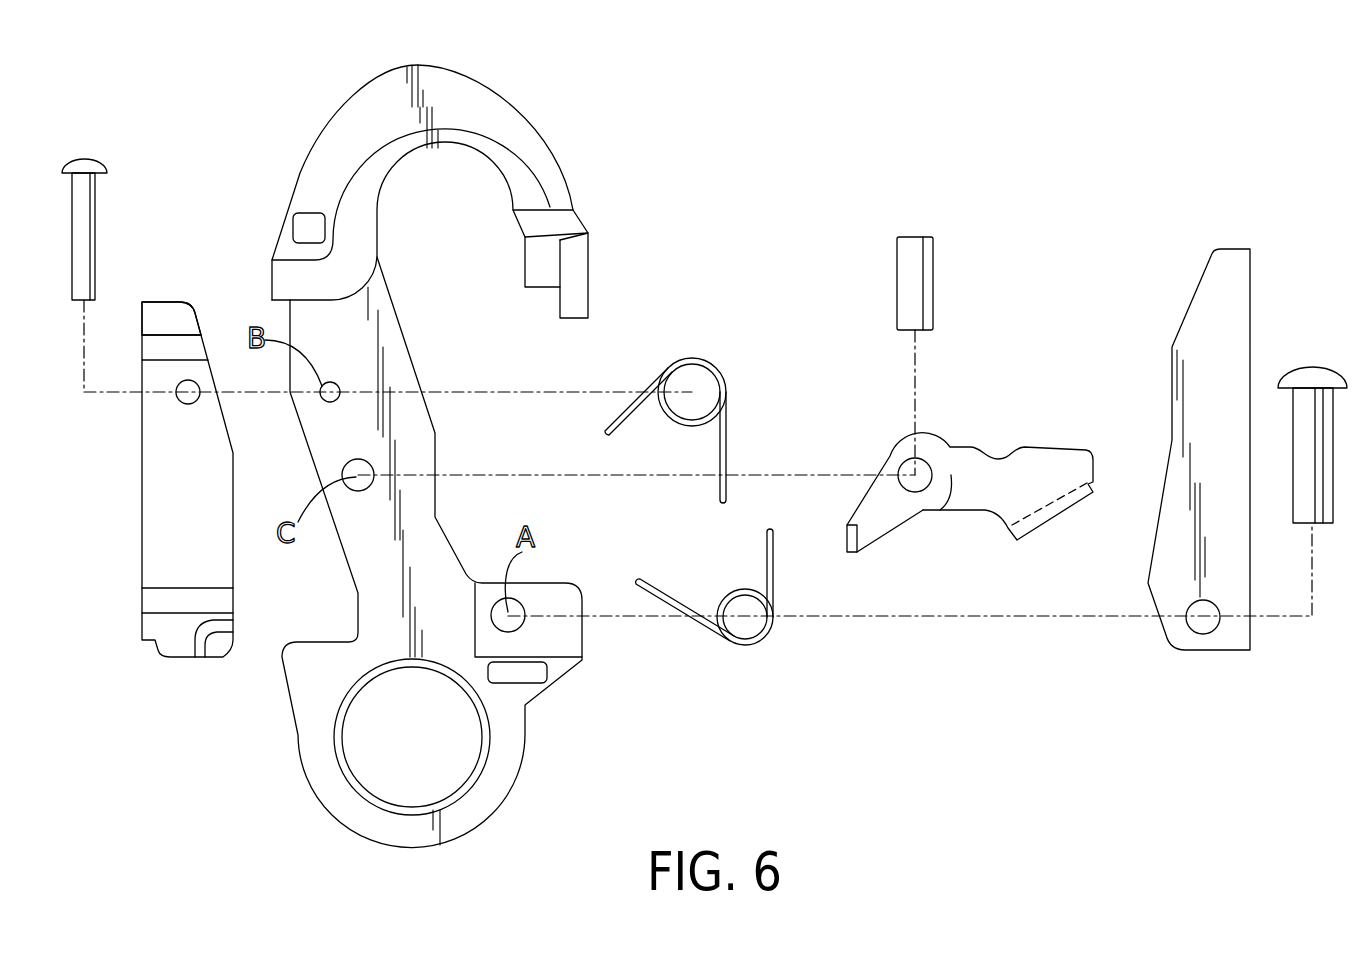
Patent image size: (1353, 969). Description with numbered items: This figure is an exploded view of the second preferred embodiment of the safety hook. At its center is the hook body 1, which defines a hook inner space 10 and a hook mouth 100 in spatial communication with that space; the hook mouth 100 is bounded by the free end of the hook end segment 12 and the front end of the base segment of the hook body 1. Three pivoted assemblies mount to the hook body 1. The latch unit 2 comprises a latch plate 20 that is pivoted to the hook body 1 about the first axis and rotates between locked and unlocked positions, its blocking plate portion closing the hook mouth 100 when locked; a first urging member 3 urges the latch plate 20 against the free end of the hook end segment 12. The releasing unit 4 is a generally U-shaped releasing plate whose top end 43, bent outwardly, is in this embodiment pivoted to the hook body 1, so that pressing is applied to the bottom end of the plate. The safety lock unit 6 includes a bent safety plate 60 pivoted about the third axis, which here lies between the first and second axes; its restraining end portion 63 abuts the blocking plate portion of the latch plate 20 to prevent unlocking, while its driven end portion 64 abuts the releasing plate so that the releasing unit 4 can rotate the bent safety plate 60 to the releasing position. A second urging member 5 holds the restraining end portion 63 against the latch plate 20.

The hook body 1 is at (318, 832).
The latch unit 2 is at (1265, 233).
The first urging member 3 is at (765, 646).
The releasing unit 4 is at (118, 665).
The second urging member 5 is at (716, 352).
The safety lock unit 6 is at (1038, 428).
The hook inner space 10 is at (458, 222).
The hook end segment 12 is at (322, 98).
The latch plate 20 is at (1258, 316).
The top end 43 is at (140, 321).
The bent safety plate 60 is at (960, 514).
The restraining end portion 63 is at (1095, 467).
The driven end portion 64 is at (843, 540).
The hook mouth 100 is at (585, 362).